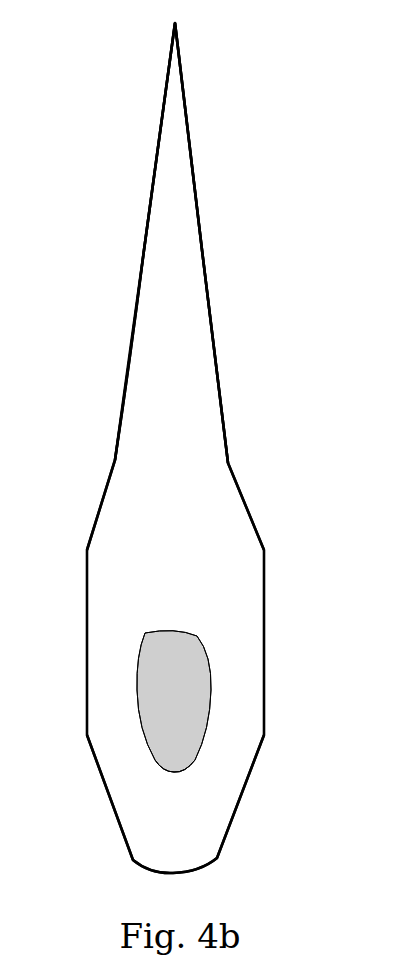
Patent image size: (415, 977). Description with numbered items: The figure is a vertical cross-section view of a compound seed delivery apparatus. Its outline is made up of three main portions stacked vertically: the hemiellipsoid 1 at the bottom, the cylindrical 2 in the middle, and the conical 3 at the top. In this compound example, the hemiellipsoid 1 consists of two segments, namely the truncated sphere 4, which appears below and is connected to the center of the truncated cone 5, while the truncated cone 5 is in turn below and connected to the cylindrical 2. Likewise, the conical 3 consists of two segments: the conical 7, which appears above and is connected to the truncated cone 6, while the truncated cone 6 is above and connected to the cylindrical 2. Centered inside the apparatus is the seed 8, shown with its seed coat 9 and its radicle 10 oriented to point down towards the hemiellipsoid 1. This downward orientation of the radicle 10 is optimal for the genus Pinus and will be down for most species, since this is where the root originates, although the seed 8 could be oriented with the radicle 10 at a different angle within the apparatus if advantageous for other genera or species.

The hemiellipsoid 1 is at (197, 448).
The cylindrical 2 is at (115, 637).
The conical 3 is at (273, 420).
The truncated sphere 4 is at (157, 859).
The truncated cone 5 is at (130, 785).
The truncated cone 6 is at (128, 503).
The conical 7 is at (155, 325).
The seed 8 is at (172, 705).
The seed coat 9 is at (207, 668).
The radicle 10 is at (185, 770).